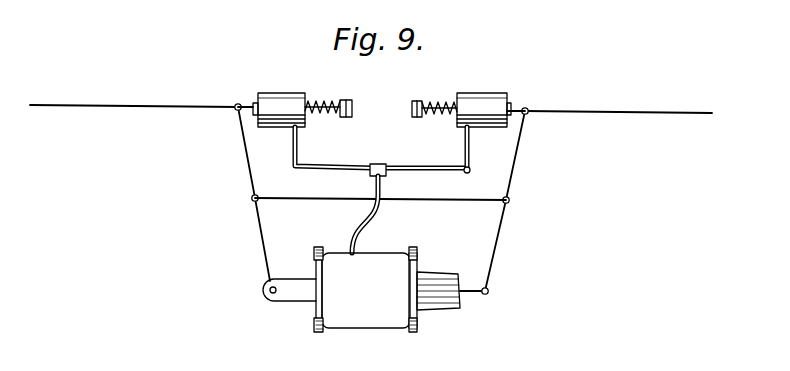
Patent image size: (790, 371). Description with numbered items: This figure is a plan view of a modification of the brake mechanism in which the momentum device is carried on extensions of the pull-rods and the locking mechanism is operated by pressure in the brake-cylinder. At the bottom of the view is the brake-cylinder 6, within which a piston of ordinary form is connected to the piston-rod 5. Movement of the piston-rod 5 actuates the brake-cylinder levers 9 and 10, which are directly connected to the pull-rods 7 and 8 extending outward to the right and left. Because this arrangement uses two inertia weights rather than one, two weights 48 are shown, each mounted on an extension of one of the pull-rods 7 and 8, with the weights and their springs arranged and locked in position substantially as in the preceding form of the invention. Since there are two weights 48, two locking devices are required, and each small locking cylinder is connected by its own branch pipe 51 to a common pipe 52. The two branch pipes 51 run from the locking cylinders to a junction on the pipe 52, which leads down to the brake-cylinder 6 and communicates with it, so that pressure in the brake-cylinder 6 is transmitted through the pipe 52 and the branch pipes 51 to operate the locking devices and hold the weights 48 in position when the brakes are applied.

The piston-rod 5 is at (478, 299).
The brake-cylinder 6 is at (361, 289).
The pull-rod 7 is at (586, 110).
The pull-rod 8 is at (160, 104).
The brake-cylinder lever 9 is at (515, 161).
The brake-cylinder lever 10 is at (248, 167).
The weight 48 is at (282, 97).
The branch pipe 51 is at (300, 145).
The pipe 52 is at (368, 215).